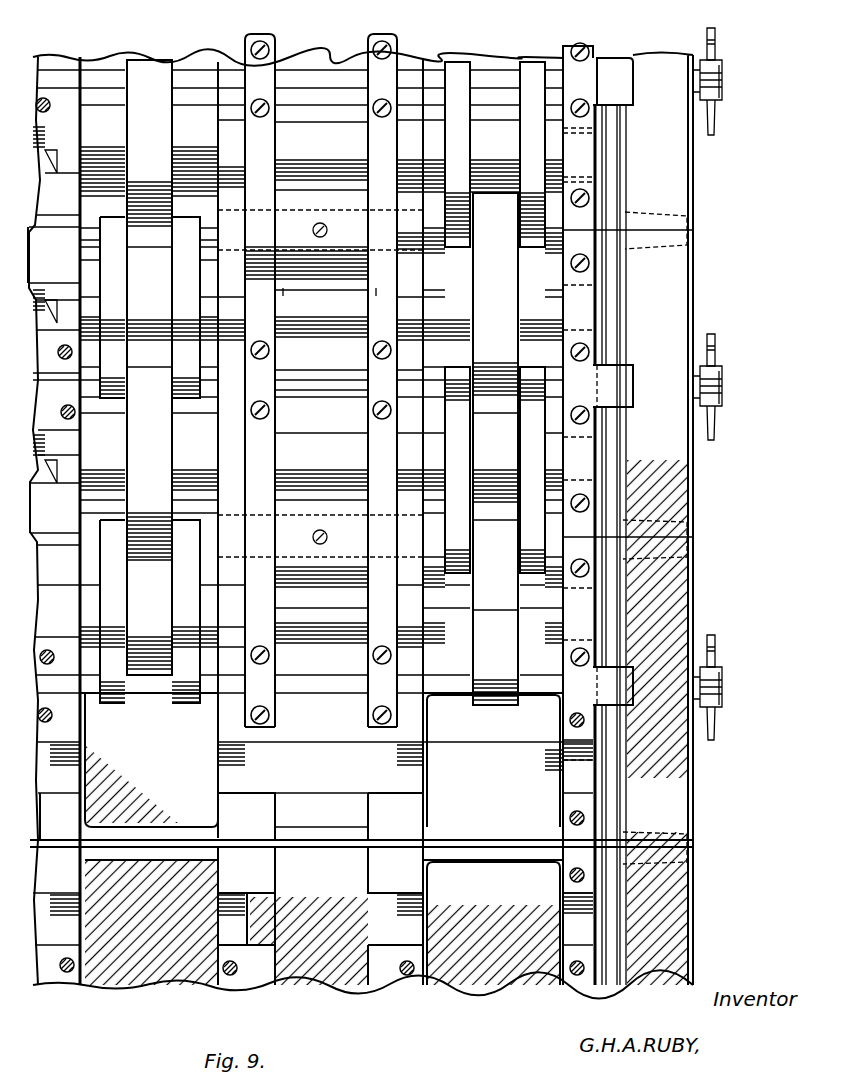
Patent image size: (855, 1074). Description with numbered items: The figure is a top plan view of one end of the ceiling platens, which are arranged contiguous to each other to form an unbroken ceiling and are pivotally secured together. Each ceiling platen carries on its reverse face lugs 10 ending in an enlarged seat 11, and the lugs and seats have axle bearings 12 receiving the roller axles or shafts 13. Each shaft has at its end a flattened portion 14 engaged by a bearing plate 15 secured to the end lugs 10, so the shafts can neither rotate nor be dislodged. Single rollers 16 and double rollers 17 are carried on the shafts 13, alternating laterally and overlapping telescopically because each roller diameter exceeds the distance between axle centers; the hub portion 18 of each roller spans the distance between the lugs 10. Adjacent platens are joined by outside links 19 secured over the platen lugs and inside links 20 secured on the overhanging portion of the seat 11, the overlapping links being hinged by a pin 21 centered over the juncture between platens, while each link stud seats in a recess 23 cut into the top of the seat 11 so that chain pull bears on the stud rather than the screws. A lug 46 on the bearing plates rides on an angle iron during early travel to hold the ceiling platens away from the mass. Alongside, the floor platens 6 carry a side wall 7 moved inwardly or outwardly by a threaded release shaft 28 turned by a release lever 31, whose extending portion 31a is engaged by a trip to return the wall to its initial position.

The floor platens 6 is at (497, 57).
The side wall 7 is at (700, 265).
The lugs 10 is at (220, 60).
The enlarged seat 11 is at (375, 873).
The axle bearings 12 is at (565, 900).
The roller axles or shafts 13 is at (306, 448).
The flattened portion 14 is at (575, 133).
The bearing plate 15 is at (568, 50).
The single rollers 16 is at (322, 382).
The double rollers 17 is at (515, 130).
The hub portion 18 is at (321, 416).
The outside links 19 is at (395, 453).
The inside links 20 is at (326, 302).
The pin 21 is at (320, 383).
The recess 23 is at (232, 78).
The release shaft 28 is at (724, 82).
The release lever 31 is at (718, 52).
The extending portion 31a is at (718, 104).
The lug 46 is at (622, 55).